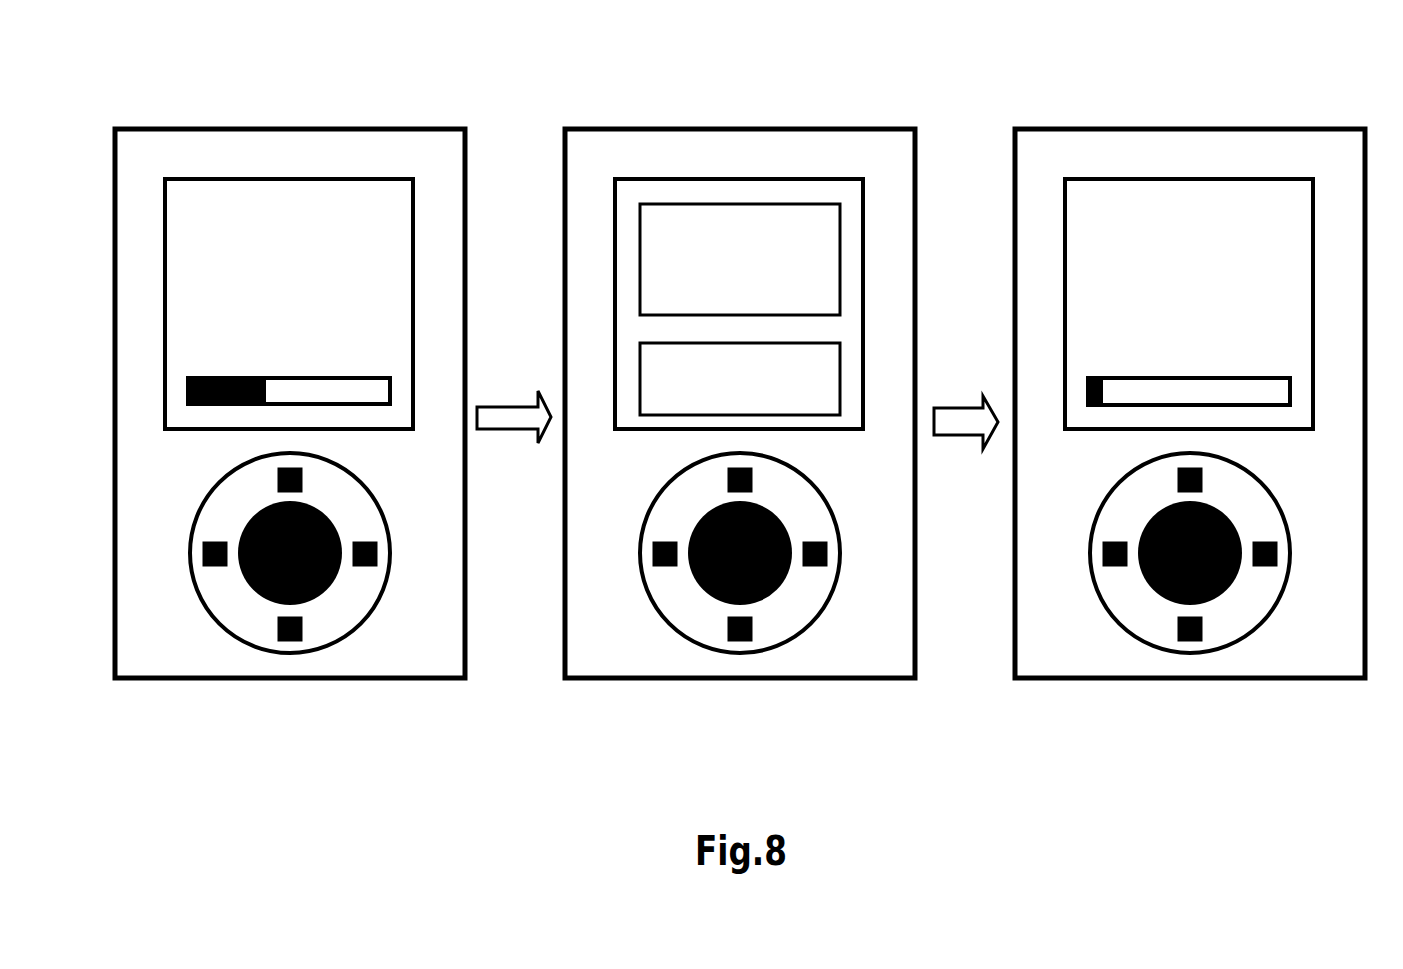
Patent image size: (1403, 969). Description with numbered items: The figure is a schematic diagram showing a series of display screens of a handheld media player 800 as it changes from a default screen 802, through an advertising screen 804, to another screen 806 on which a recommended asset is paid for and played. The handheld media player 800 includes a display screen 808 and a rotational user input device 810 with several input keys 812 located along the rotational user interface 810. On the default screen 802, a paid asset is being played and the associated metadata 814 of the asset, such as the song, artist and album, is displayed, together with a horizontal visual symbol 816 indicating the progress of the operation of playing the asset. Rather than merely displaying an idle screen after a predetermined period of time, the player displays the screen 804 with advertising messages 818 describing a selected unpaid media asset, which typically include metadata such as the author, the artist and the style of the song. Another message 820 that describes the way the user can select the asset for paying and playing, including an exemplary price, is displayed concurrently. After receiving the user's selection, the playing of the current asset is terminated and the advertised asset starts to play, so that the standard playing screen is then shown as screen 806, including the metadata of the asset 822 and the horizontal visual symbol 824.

The handheld media player 800 is at (190, 115).
The default screen 802 is at (290, 372).
The advertising screen 804 is at (740, 372).
The playing screen for recommended asset 806 is at (1190, 372).
The display screen 808 is at (188, 428).
The rotational user input device 810 is at (192, 582).
The input keys 812 is at (375, 545).
The metadata 814 is at (328, 263).
The horizontal visual symbol 816 is at (228, 375).
The advertising messages 818 is at (788, 203).
The message 820 is at (815, 415).
The metadata of the asset 822 is at (1229, 267).
The horizontal visual symbol 824 is at (1265, 377).